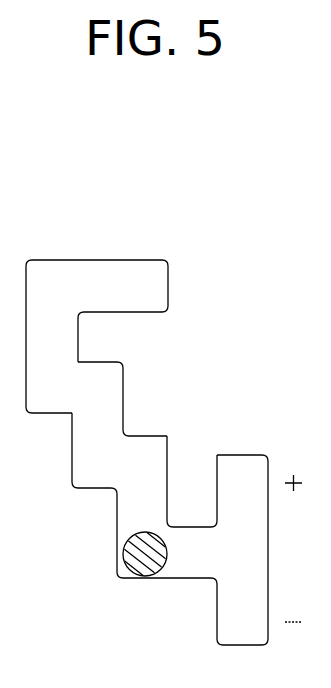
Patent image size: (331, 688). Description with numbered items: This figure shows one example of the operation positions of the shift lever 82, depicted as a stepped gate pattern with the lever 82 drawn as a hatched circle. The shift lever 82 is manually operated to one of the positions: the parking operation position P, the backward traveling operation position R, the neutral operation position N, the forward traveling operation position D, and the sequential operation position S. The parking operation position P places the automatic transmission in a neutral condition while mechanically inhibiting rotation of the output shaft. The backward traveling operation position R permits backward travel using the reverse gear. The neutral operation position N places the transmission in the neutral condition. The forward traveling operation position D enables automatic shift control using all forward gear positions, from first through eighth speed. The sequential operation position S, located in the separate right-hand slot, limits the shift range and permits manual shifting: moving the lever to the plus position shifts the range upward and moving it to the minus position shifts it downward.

The shift lever 82 is at (140, 576).
The parking operation position P is at (111, 336).
The backward traveling operation position R is at (119, 441).
The neutral operation position N is at (192, 481).
The forward traveling operation position D is at (149, 560).
The sequential operation position S is at (259, 550).